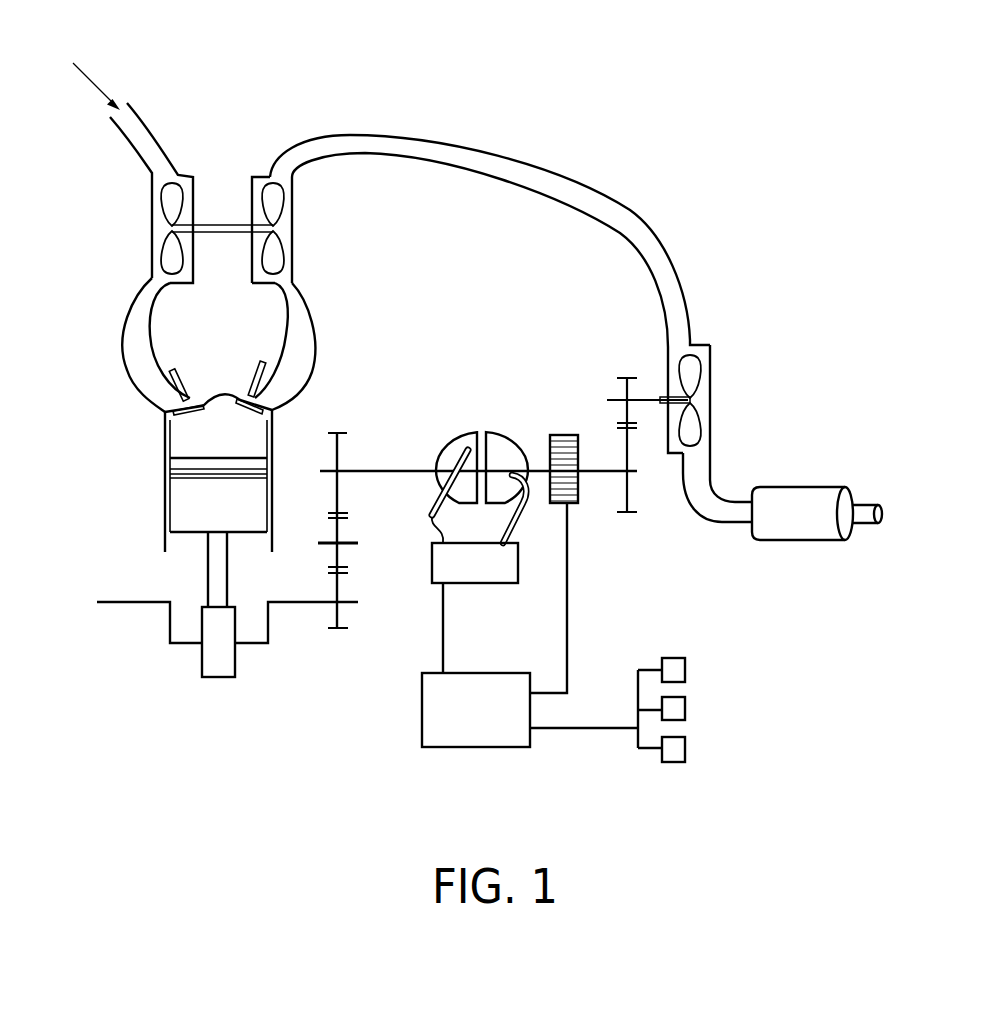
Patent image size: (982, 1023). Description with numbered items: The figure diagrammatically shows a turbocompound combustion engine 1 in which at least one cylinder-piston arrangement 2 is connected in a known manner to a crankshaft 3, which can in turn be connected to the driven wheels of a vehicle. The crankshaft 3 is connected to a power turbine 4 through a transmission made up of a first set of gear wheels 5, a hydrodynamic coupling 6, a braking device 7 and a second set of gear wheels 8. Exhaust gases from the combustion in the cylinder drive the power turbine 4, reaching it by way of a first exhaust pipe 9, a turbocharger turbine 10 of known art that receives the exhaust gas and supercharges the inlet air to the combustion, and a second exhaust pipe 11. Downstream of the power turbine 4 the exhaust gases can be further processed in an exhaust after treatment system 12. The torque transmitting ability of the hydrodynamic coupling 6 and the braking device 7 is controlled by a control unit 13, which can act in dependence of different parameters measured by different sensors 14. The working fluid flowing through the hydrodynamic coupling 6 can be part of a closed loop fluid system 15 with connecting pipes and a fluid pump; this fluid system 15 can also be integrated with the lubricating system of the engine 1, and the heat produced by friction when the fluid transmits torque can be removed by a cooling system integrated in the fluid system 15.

The turbocompound combustion engine 1 is at (722, 68).
The cylinder-piston arrangement 2 is at (134, 448).
The crankshaft 3 is at (170, 623).
The power turbine 4 is at (712, 383).
The first set of gear wheels 5 is at (337, 483).
The hydrodynamic coupling 6 is at (468, 432).
The braking device 7 is at (573, 505).
The second set of gear wheels 8 is at (628, 408).
The first exhaust pipe 9 is at (313, 338).
The turbocharger turbine 10 is at (193, 187).
The second exhaust pipe 11 is at (517, 162).
The exhaust after treatment system 12 is at (802, 498).
The control unit 13 is at (480, 747).
The sensors 14 is at (687, 747).
The closed loop fluid system 15 is at (483, 585).